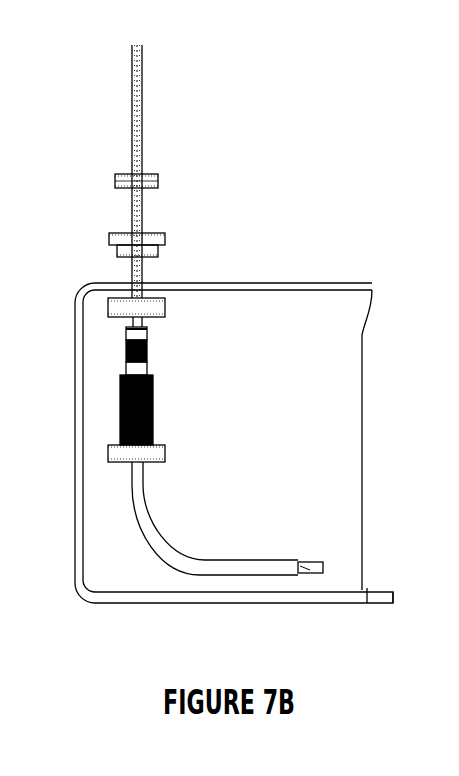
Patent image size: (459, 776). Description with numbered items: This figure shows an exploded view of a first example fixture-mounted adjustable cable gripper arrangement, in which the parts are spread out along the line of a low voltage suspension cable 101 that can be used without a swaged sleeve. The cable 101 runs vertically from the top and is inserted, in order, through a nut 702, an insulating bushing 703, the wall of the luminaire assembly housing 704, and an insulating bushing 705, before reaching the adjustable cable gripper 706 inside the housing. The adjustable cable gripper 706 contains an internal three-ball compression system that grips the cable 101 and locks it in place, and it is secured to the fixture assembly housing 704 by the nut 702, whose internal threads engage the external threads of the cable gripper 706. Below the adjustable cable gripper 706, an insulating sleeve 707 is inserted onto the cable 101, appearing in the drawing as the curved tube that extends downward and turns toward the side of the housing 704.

The low voltage suspension cable 101 is at (142, 80).
The nut 702 is at (158, 178).
The insulating bushing 703 is at (109, 236).
The luminaire assembly housing 704 is at (287, 283).
The insulating bushing 705 is at (165, 312).
The adjustable cable gripper 706 is at (153, 413).
The insulating sleeve 707 is at (253, 570).